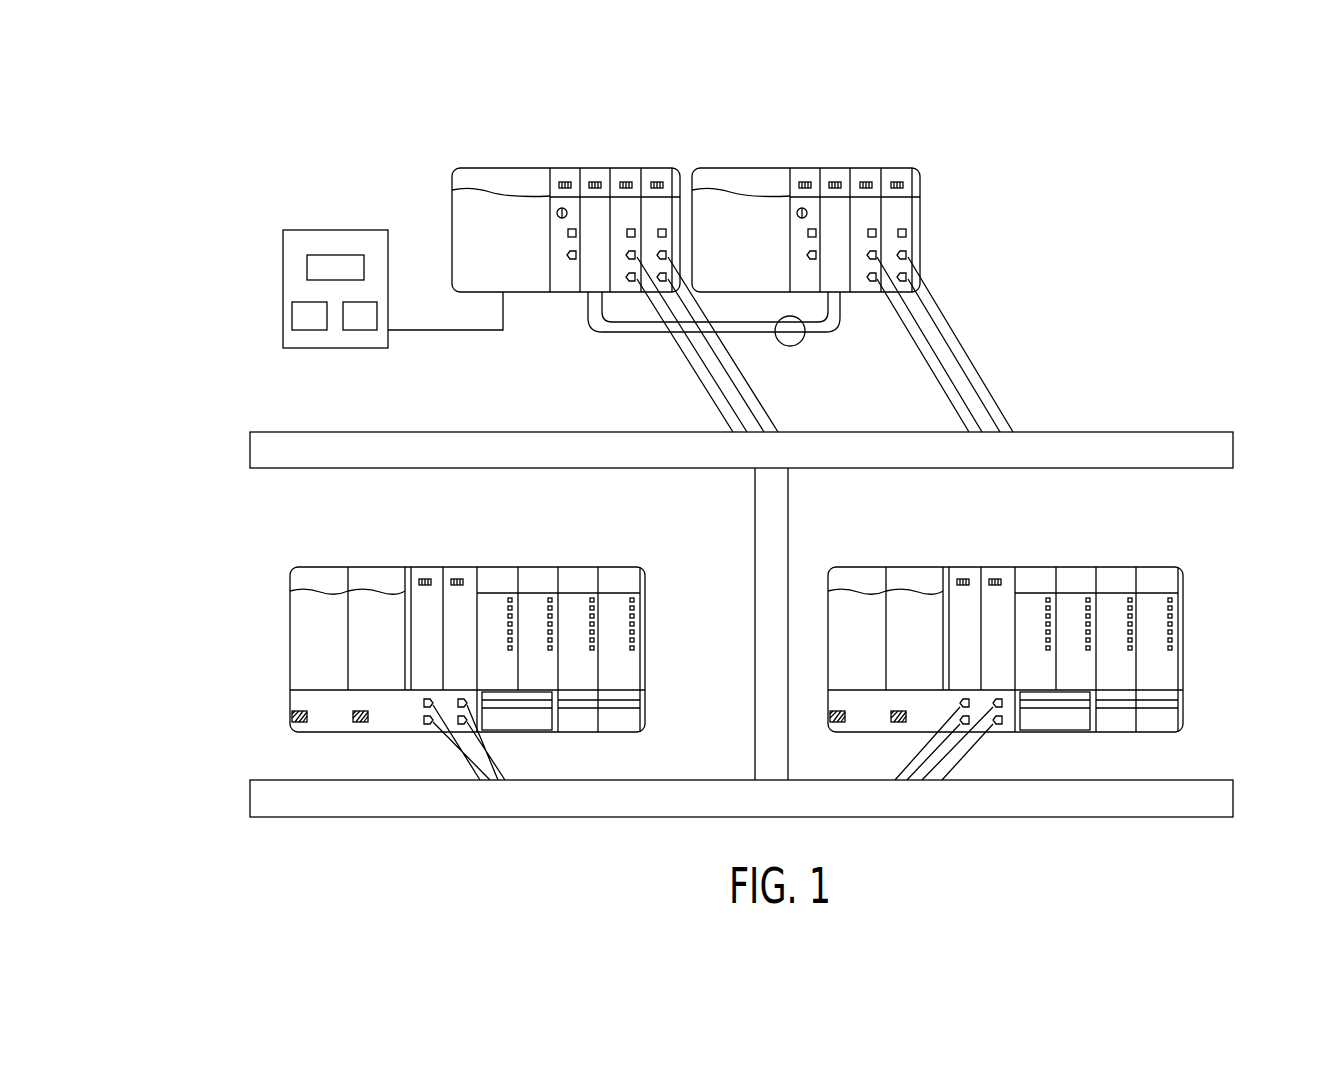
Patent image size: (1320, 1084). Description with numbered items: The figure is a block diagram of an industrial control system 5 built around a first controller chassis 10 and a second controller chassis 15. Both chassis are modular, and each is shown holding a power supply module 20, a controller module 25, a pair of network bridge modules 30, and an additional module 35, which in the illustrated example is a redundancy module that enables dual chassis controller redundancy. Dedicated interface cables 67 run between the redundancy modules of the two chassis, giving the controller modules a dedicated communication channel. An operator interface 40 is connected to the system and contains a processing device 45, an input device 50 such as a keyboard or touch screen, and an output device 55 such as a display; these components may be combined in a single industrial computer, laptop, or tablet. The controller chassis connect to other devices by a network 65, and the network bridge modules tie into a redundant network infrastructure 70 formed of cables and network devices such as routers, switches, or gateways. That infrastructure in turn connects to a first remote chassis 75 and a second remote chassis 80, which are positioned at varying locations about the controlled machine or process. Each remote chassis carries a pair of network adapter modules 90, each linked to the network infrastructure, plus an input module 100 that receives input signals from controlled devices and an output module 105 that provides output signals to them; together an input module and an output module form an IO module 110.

The industrial control system 5 is at (222, 568).
The first controller chassis 10 is at (452, 146).
The second controller chassis 15 is at (865, 130).
The power supply module 20 is at (491, 168).
The controller module 25 is at (558, 212).
The network bridge modules 30 is at (660, 167).
The additional module 35 is at (594, 218).
The operator interface 40 is at (330, 230).
The processing device 45 is at (308, 331).
The input device 50 is at (360, 331).
The output device 55 is at (307, 264).
The network 65 is at (1060, 396).
The dedicated interface cables 67 is at (790, 346).
The redundant network infrastructure 70 is at (779, 516).
The first remote chassis 75 is at (648, 626).
The second remote chassis 80 is at (1185, 626).
The network adapter modules 90 is at (457, 567).
The input module 100 is at (500, 567).
The output module 105 is at (545, 578).
The IO module 110 is at (486, 734).